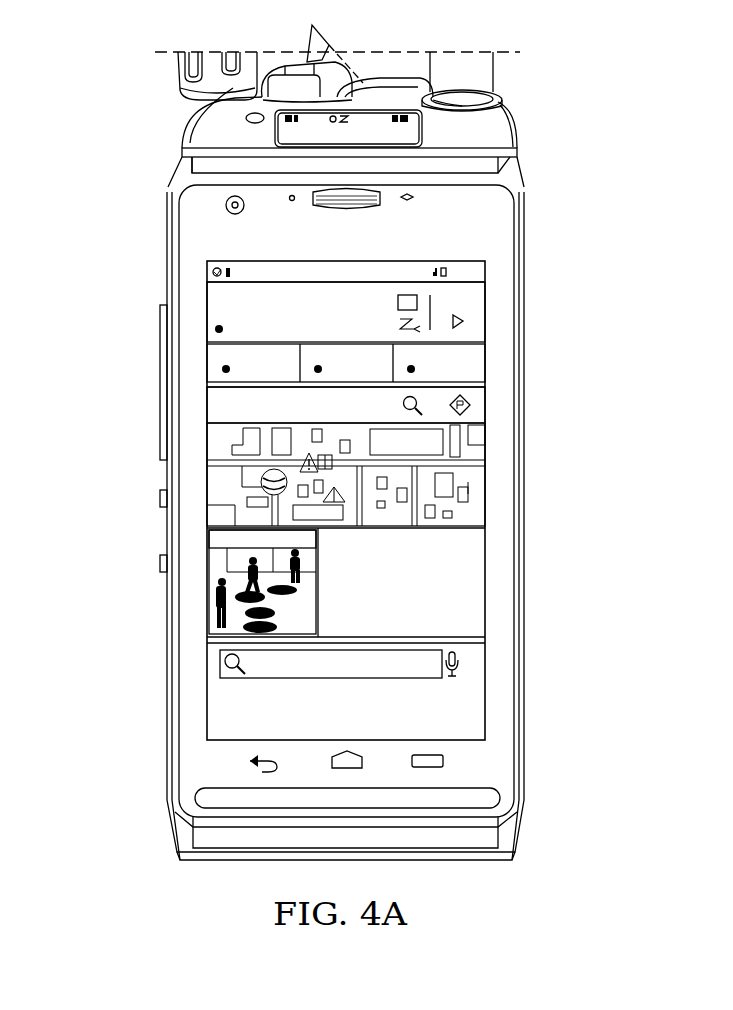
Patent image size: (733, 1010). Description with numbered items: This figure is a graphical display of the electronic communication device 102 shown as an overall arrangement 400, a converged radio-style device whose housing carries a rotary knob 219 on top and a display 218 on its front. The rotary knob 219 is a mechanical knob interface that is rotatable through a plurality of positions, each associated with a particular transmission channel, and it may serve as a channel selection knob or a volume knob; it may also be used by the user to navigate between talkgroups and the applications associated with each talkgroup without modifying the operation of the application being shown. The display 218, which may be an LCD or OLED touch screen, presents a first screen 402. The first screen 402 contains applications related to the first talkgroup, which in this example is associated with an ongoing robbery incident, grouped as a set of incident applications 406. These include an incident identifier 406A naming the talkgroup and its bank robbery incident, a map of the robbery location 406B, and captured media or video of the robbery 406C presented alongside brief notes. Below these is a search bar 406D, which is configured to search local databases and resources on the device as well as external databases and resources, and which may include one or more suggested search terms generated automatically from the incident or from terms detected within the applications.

The portable communication device 400 is at (108, 44).
The electronic communication device 102 is at (521, 190).
The rotary knob 219 is at (497, 70).
The display 218 is at (524, 504).
The first screen 402 is at (624, 403).
The talkgroup information panel 406 is at (486, 303).
The incident identifier 406A is at (215, 328).
The map of the robbery location 406B is at (215, 445).
The captured media or video of the robbery 406C is at (217, 585).
The search bar 406D is at (228, 722).